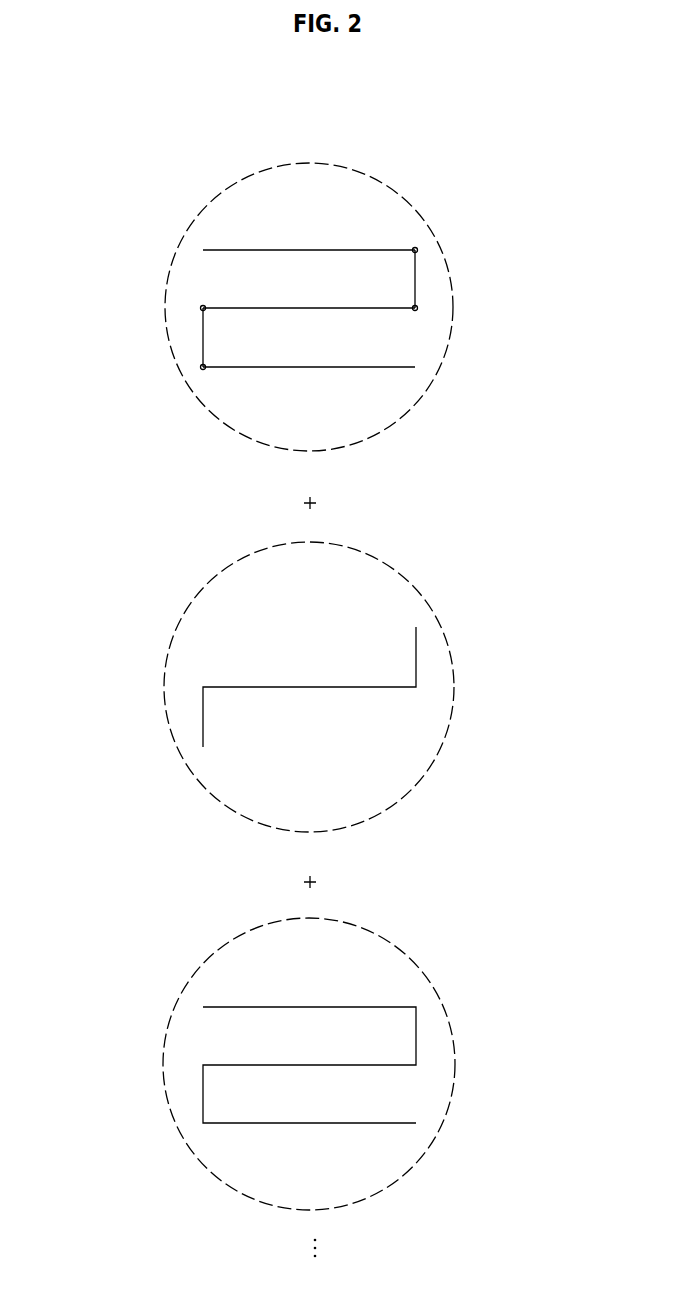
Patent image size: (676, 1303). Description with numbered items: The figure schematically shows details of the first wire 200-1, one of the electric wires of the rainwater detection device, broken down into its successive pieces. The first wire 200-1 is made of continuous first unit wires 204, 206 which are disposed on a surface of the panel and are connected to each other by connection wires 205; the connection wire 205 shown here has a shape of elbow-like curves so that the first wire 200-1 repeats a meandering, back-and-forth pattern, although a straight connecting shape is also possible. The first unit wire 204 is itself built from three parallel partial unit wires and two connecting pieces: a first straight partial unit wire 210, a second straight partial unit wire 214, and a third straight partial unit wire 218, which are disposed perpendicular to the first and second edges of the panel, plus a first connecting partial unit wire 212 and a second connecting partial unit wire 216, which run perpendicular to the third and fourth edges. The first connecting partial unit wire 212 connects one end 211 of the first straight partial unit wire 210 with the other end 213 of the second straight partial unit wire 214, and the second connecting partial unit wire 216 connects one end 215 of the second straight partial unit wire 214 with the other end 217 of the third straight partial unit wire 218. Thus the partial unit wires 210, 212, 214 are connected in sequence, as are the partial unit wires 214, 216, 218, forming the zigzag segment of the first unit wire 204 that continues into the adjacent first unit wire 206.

The first wire 200-1 is at (150, 131).
The first unit wire 204 is at (427, 226).
The connection wire 205 is at (430, 605).
The first unit wire 206 is at (430, 985).
The (1_1)-st partial unit wire 210 is at (288, 250).
The one end of the (1_1)-st partial unit wire 211 is at (415, 250).
The (2_1)-st partial unit wire 212 is at (415, 280).
The other end of the (1_2)-nd partial unit wire 213 is at (415, 308).
The (1_2)-nd partial unit wire 214 is at (288, 308).
The one end of the (1_2)-nd partial unit wire 215 is at (203, 308).
The (2_2)-nd partial unit wire 216 is at (203, 340).
The other end of the (1_3)-rd partial unit wire 217 is at (203, 367).
The (1_3)-rd partial unit wire 218 is at (288, 367).